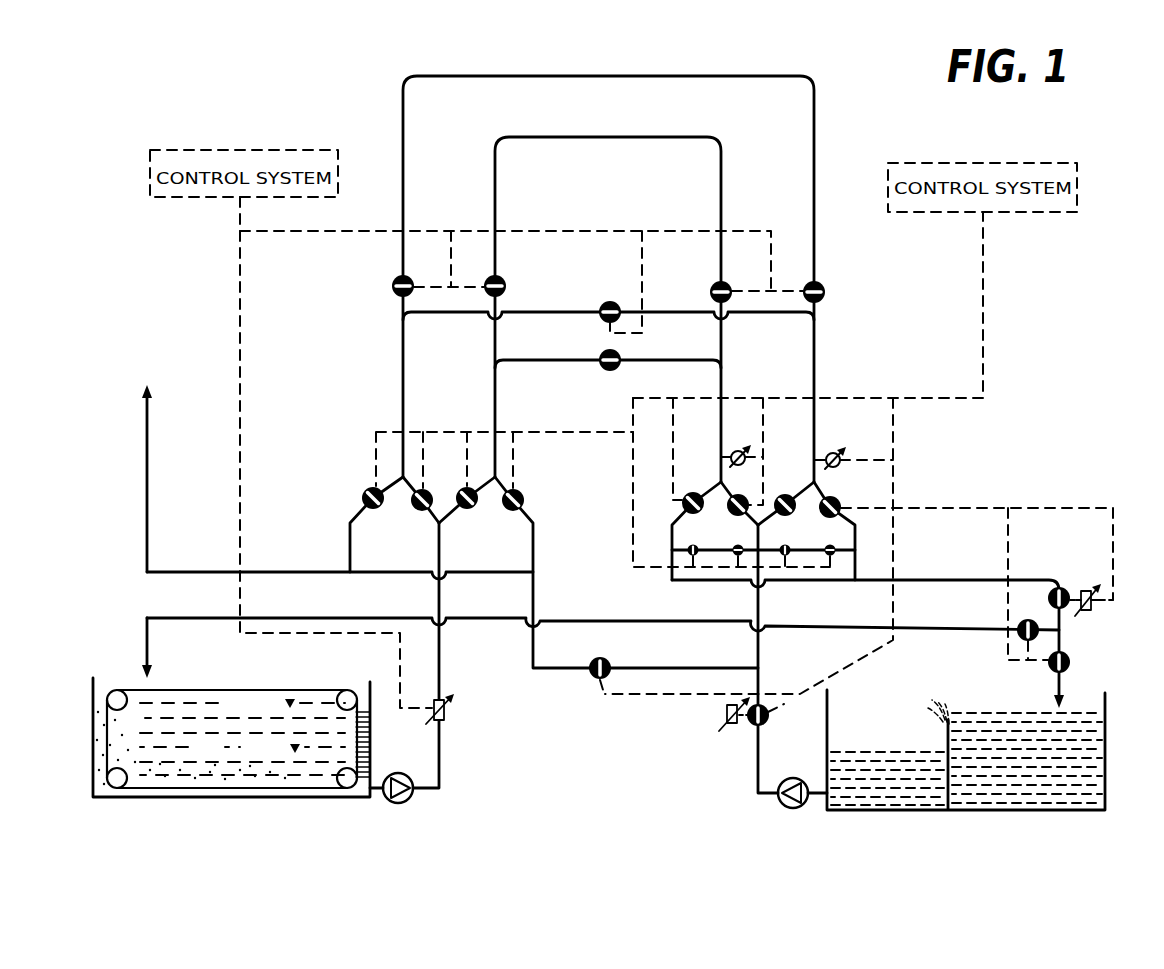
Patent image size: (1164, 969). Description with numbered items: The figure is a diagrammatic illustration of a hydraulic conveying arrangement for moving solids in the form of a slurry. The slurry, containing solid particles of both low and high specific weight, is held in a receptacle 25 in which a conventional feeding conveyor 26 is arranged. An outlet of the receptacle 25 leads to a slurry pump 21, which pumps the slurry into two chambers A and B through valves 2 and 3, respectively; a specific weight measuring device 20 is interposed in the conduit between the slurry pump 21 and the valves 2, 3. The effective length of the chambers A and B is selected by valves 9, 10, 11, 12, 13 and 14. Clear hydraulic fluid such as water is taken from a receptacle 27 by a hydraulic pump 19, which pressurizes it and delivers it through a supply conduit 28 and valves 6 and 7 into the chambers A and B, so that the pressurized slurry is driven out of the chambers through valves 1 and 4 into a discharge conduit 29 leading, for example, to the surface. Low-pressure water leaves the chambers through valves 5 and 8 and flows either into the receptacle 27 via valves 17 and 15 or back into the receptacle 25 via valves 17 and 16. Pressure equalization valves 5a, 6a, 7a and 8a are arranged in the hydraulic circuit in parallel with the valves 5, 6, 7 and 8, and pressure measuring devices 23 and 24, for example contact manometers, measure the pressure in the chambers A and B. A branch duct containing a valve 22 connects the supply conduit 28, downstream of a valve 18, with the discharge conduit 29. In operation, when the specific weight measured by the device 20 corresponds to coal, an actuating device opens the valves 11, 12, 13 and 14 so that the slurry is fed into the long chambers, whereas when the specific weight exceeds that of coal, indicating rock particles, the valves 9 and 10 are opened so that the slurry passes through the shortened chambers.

The valve 1 is at (376, 510).
The valve 2 is at (421, 512).
The valve 3 is at (466, 510).
The valve 4 is at (512, 512).
The valve 5 is at (695, 492).
The valve 6 is at (746, 484).
The valve 7 is at (784, 483).
The valve 8 is at (842, 502).
The pressure equalization valve 5a is at (688, 544).
The pressure equalization valve 6a is at (733, 545).
The pressure equalization valve 7a is at (780, 545).
The pressure equalization valve 8a is at (825, 545).
The valve 9 is at (612, 372).
The valve 10 is at (618, 304).
The valve 11 is at (413, 283).
The valve 12 is at (824, 290).
The valve 13 is at (505, 283).
The valve 14 is at (731, 290).
The valve 15 is at (1071, 666).
The valve 16 is at (1021, 614).
The valve 17 is at (1069, 590).
The valve 18 is at (768, 722).
The hydraulic pump 19 is at (798, 780).
The specific weight measuring device 20 is at (448, 712).
The slurry pump 21 is at (398, 773).
The valve 22 is at (610, 662).
The pressure measuring device 23 is at (732, 452).
The pressure measuring device 24 is at (826, 453).
The receptacle 25 is at (196, 749).
The feeding conveyor 26 is at (230, 690).
The receptacle 27 is at (948, 718).
The supply conduit 28 is at (760, 658).
The discharge conduit 29 is at (158, 483).
The chamber A is at (620, 74).
The chamber B is at (621, 135).